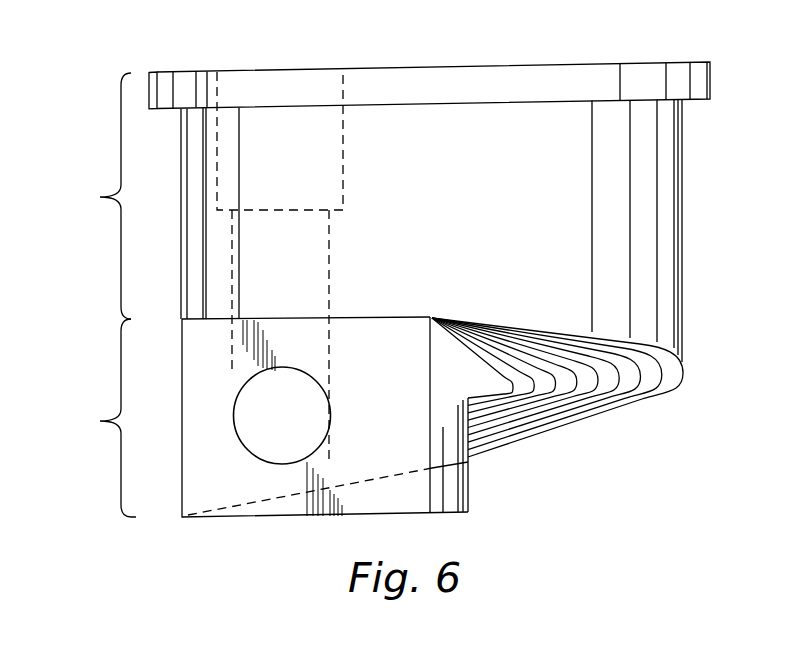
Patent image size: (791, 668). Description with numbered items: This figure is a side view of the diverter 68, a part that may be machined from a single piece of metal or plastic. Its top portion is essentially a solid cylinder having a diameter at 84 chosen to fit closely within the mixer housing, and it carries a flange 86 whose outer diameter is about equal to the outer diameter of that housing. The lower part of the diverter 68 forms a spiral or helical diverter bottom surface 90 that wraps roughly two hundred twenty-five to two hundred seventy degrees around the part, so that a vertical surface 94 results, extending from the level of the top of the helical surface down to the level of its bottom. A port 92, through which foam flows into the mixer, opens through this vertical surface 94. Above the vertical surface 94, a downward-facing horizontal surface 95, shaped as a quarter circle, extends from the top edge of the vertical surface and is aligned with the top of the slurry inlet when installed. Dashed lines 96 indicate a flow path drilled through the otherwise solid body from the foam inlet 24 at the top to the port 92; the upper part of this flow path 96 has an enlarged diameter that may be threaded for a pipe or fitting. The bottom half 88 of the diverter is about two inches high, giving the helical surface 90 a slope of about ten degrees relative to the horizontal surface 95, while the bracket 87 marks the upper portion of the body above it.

The foam inlet 24 is at (305, 72).
The flange 86 is at (162, 72).
The diameter 84 is at (180, 183).
The diverter 68 is at (526, 205).
The flow path 96 is at (329, 258).
The upper portion 87 is at (95, 196).
The bottom half 88 is at (98, 418).
The vertical surface 94 is at (390, 412).
The horizontal surface 95 is at (397, 319).
The port 92 is at (265, 448).
The helical diverter bottom surface 90 is at (635, 397).